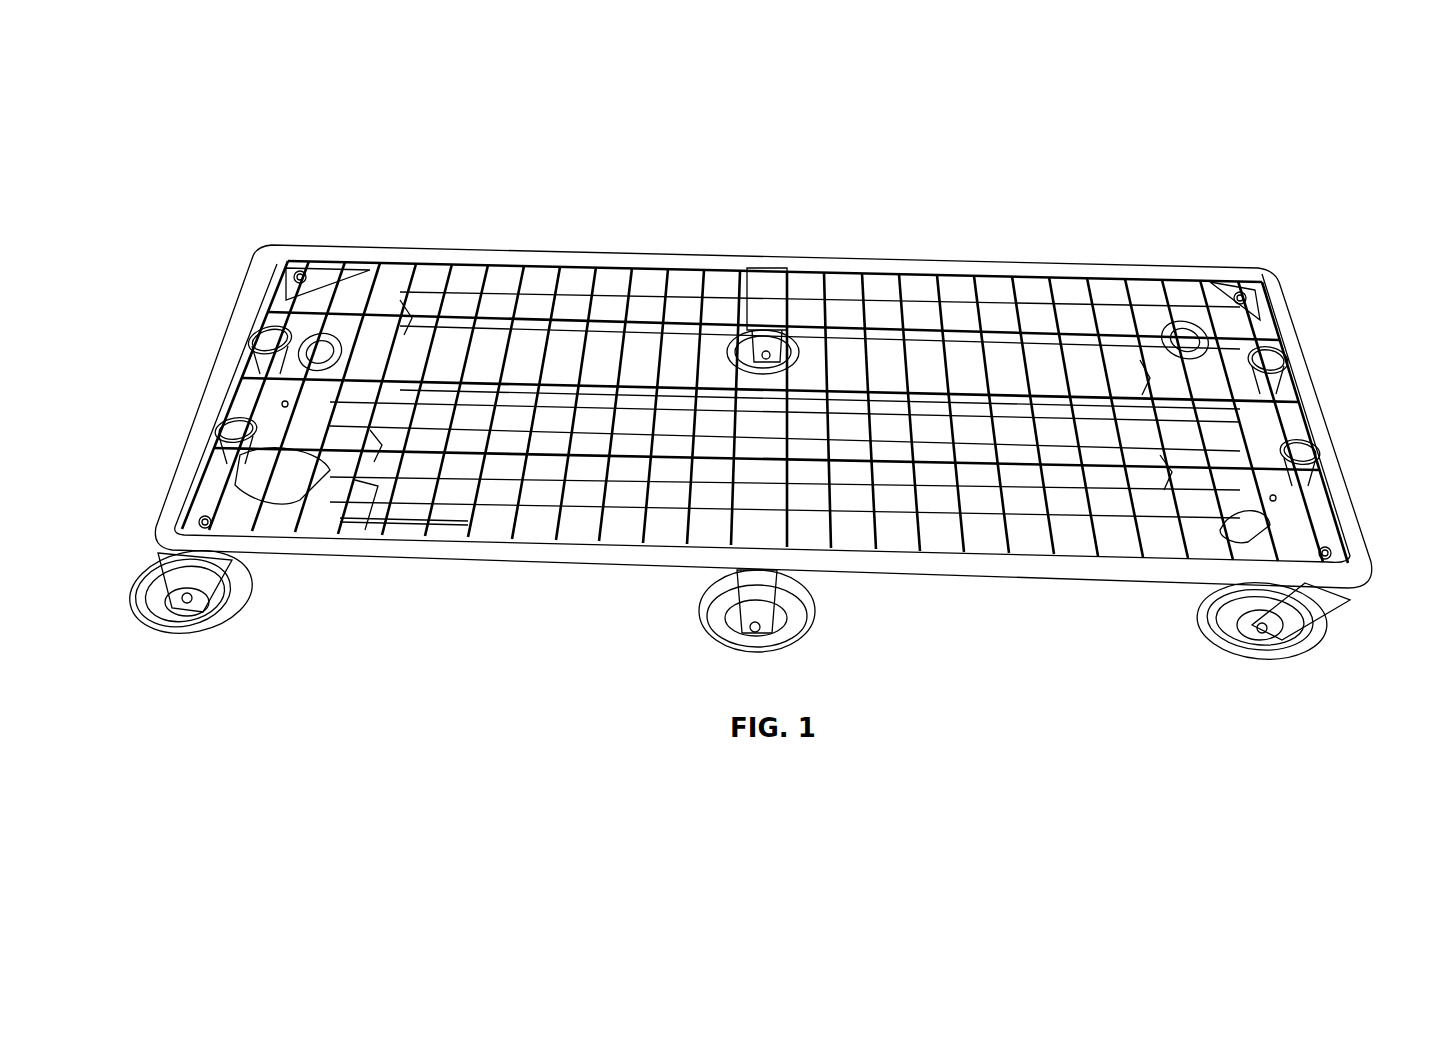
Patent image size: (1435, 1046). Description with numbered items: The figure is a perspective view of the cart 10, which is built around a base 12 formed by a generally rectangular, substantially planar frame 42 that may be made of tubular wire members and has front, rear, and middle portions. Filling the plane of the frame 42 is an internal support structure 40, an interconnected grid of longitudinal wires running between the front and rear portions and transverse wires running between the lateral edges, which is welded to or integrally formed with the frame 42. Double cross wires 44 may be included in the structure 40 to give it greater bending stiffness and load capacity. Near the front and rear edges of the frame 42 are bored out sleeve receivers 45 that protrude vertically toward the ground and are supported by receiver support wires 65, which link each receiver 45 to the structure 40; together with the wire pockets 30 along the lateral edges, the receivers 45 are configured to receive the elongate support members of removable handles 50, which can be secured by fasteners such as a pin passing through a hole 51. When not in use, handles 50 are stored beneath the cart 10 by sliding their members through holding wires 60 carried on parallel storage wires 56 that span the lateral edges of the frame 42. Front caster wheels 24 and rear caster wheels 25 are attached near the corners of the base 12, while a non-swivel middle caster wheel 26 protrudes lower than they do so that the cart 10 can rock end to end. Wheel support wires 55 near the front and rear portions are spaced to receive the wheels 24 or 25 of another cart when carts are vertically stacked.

The cart 10 is at (1221, 129).
The base 12 is at (672, 624).
The front caster wheels 24 is at (1186, 312).
The rear caster wheels 25 is at (340, 348).
The middle caster wheel 26 is at (731, 310).
The wire pockets 30 is at (510, 278).
The internal support structure 40 is at (598, 302).
The frame 42 is at (258, 274).
The double cross wires 44 is at (895, 320).
The bored out sleeve receivers 45 is at (258, 340).
The handles 50 is at (368, 492).
The hole 51 is at (282, 404).
The wheel support wires 55 is at (300, 262).
The storage wires 56 is at (337, 522).
The holding wires 60 is at (408, 312).
The receiver support wires 65 is at (310, 465).